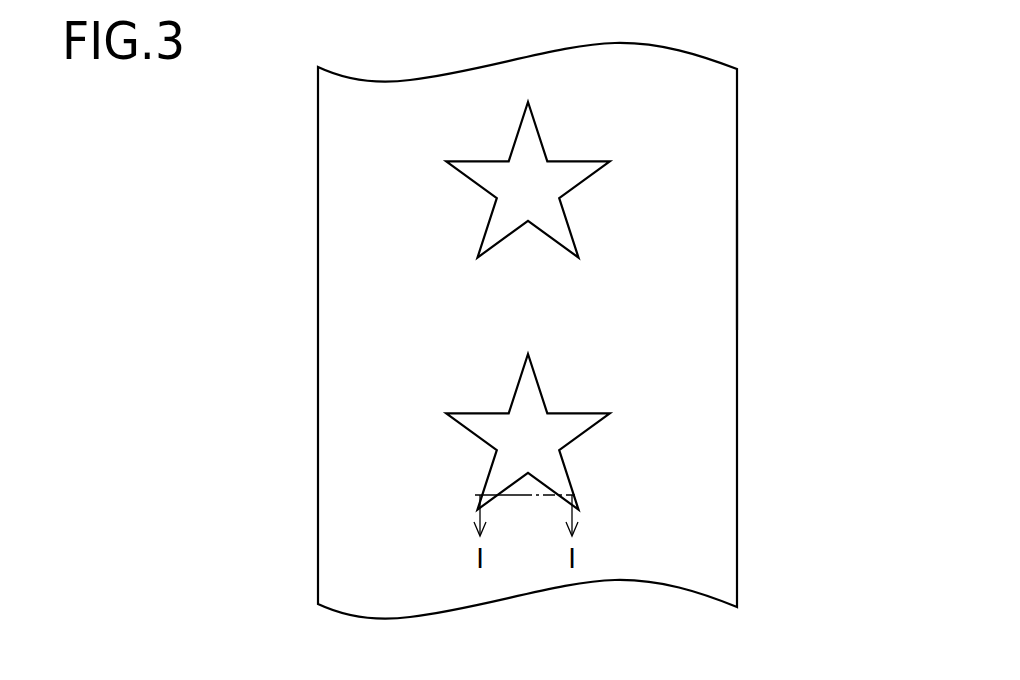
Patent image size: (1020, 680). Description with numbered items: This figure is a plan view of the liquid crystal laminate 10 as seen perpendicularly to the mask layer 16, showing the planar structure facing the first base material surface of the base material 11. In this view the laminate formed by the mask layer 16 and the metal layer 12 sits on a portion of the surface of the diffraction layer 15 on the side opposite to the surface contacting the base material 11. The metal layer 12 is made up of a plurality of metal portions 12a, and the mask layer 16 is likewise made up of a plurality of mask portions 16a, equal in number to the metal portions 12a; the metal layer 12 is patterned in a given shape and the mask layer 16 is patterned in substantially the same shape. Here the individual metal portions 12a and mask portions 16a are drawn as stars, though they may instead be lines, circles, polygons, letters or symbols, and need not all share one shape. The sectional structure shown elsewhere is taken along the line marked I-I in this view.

The liquid crystal laminate 10 is at (786, 105).
The base material 11 is at (727, 255).
The metal layer 12 is at (443, 142).
The metal portion 12a is at (574, 161).
The diffraction layer 15 is at (789, 265).
The mask layer 16 is at (505, 306).
The mask portion 16a is at (564, 306).